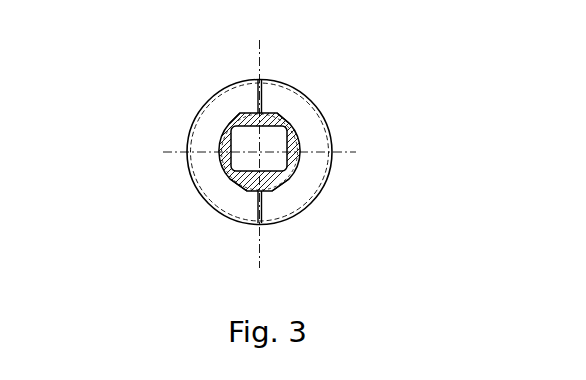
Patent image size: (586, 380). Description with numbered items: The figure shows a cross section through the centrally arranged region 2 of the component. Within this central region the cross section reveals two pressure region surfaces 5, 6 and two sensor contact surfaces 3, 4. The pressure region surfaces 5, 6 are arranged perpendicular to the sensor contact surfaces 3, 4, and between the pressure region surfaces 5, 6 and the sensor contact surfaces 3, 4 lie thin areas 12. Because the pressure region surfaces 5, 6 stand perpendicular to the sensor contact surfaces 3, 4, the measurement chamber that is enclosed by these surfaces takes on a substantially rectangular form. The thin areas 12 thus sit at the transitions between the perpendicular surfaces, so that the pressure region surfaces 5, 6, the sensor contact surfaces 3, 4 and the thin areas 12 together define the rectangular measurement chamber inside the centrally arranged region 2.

The centrally arranged region 2 is at (306, 193).
The sensor contact surface 3 is at (278, 150).
The sensor contact surface 4 is at (185, 155).
The pressure region surface 5 is at (293, 252).
The pressure region surface 6 is at (296, 58).
The thin area 12 is at (262, 156).